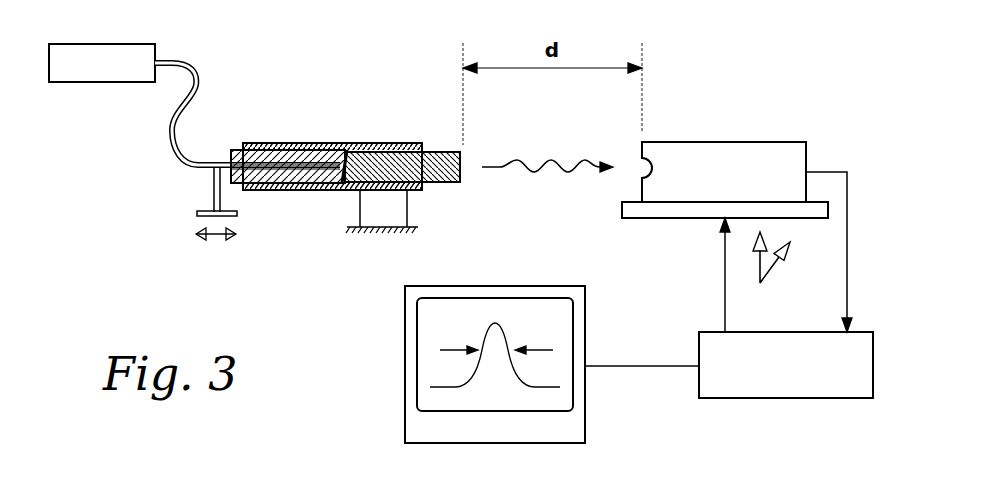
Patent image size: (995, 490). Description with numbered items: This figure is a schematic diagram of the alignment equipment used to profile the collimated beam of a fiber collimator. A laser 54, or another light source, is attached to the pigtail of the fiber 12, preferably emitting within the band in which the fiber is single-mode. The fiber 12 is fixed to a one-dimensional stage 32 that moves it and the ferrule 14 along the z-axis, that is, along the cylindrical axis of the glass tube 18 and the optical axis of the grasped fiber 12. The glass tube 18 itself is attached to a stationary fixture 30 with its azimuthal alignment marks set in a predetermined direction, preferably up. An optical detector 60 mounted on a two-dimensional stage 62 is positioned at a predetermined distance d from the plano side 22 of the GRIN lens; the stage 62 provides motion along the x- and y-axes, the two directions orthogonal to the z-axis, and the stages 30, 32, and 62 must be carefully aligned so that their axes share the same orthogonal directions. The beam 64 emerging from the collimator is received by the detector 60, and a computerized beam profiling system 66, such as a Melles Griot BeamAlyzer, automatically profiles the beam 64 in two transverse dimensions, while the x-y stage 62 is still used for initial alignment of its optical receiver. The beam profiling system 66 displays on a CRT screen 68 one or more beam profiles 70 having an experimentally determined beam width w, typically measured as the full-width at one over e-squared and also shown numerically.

The fiber 12 is at (190, 67).
The laser 54 is at (97, 83).
The ferrule 14 is at (173, 161).
The one-dimensional stage 32 is at (195, 212).
The glass tube 18 is at (330, 148).
The plano side 22 is at (440, 148).
The stationary fixture 30 is at (408, 212).
The beam 64 is at (542, 163).
The optical detector 60 is at (723, 141).
The two-dimensional stage 62 is at (658, 219).
The beam profiling system 66 is at (783, 331).
The CRT screen 68 is at (405, 363).
The beam profile 70 is at (484, 331).